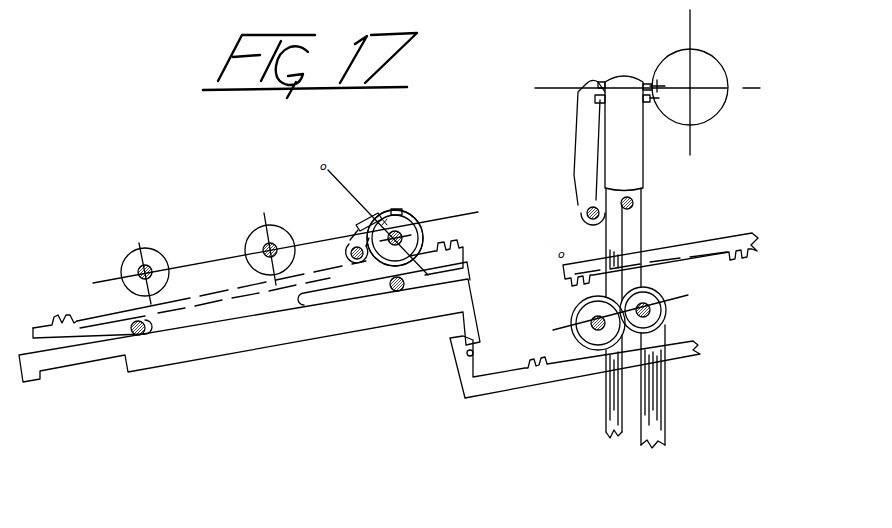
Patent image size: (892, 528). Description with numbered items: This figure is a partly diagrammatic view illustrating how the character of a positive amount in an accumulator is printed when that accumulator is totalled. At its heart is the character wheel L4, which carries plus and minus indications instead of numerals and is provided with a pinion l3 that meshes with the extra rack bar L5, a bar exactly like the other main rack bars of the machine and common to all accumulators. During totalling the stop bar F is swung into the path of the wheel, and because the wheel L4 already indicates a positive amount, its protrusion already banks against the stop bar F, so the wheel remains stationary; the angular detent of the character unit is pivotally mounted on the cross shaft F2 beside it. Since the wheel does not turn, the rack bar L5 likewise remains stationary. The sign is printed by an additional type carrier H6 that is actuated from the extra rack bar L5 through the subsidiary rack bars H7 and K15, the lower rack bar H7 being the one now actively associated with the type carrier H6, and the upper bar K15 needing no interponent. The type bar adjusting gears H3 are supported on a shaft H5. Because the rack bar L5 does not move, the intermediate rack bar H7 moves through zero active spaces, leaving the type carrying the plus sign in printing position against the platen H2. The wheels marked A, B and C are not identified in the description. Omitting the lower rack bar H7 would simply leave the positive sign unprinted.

The ratchet wheel A is at (398, 272).
The roller B is at (270, 207).
The roller C is at (142, 227).
The stop bar F is at (360, 223).
The cross shaft F2 is at (349, 245).
The character wheel L4 is at (398, 212).
The pinion l3 is at (413, 225).
The extra rack bar L5 is at (262, 335).
The platen H2 is at (718, 62).
The intermediate gear set H3 is at (575, 317).
The shaft H5 is at (595, 325).
The additional type carrier H6 is at (633, 163).
The subsidiary rack bar H7 is at (567, 373).
The upper auxiliary rack bar K15 is at (677, 253).